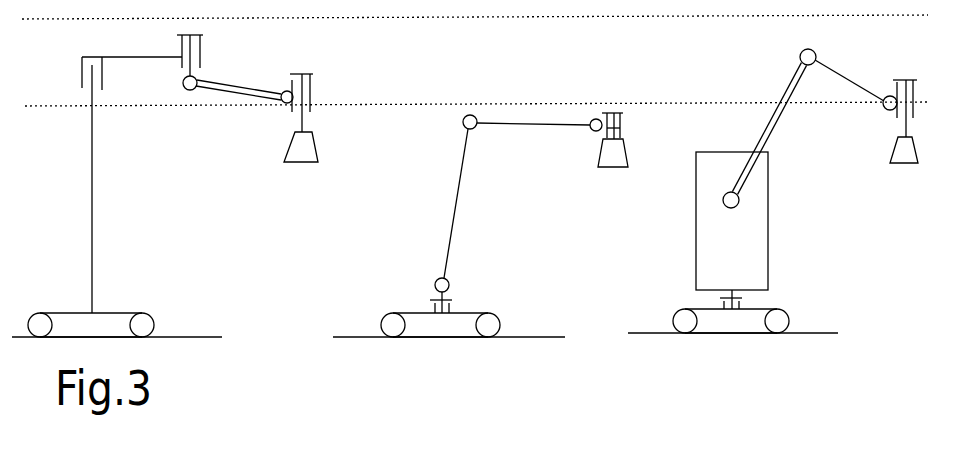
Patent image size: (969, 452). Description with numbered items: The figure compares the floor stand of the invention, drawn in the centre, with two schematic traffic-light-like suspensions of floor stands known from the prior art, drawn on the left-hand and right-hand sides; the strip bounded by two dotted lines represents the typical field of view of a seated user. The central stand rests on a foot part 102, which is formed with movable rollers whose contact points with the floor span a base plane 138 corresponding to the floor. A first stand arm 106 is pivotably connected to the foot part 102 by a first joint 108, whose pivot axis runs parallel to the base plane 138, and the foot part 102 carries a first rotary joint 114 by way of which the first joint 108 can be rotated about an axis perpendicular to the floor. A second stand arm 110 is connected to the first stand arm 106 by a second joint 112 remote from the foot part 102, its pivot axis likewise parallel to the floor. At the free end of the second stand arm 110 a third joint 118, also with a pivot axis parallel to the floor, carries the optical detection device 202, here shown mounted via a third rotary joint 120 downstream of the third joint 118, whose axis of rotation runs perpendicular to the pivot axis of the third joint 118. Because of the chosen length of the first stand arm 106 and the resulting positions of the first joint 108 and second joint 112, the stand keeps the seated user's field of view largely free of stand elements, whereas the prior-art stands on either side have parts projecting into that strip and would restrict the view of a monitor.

The foot part 102 is at (472, 312).
The first stand arm 106 is at (458, 196).
The first joint 108 is at (437, 280).
The second stand arm 110 is at (535, 128).
The second joint 112 is at (465, 116).
The first rotary joint 114 is at (432, 308).
The third joint 118 is at (594, 118).
The third rotary joint 120 is at (622, 129).
The base plane 138 is at (447, 338).
The optical detection device 202 is at (612, 157).